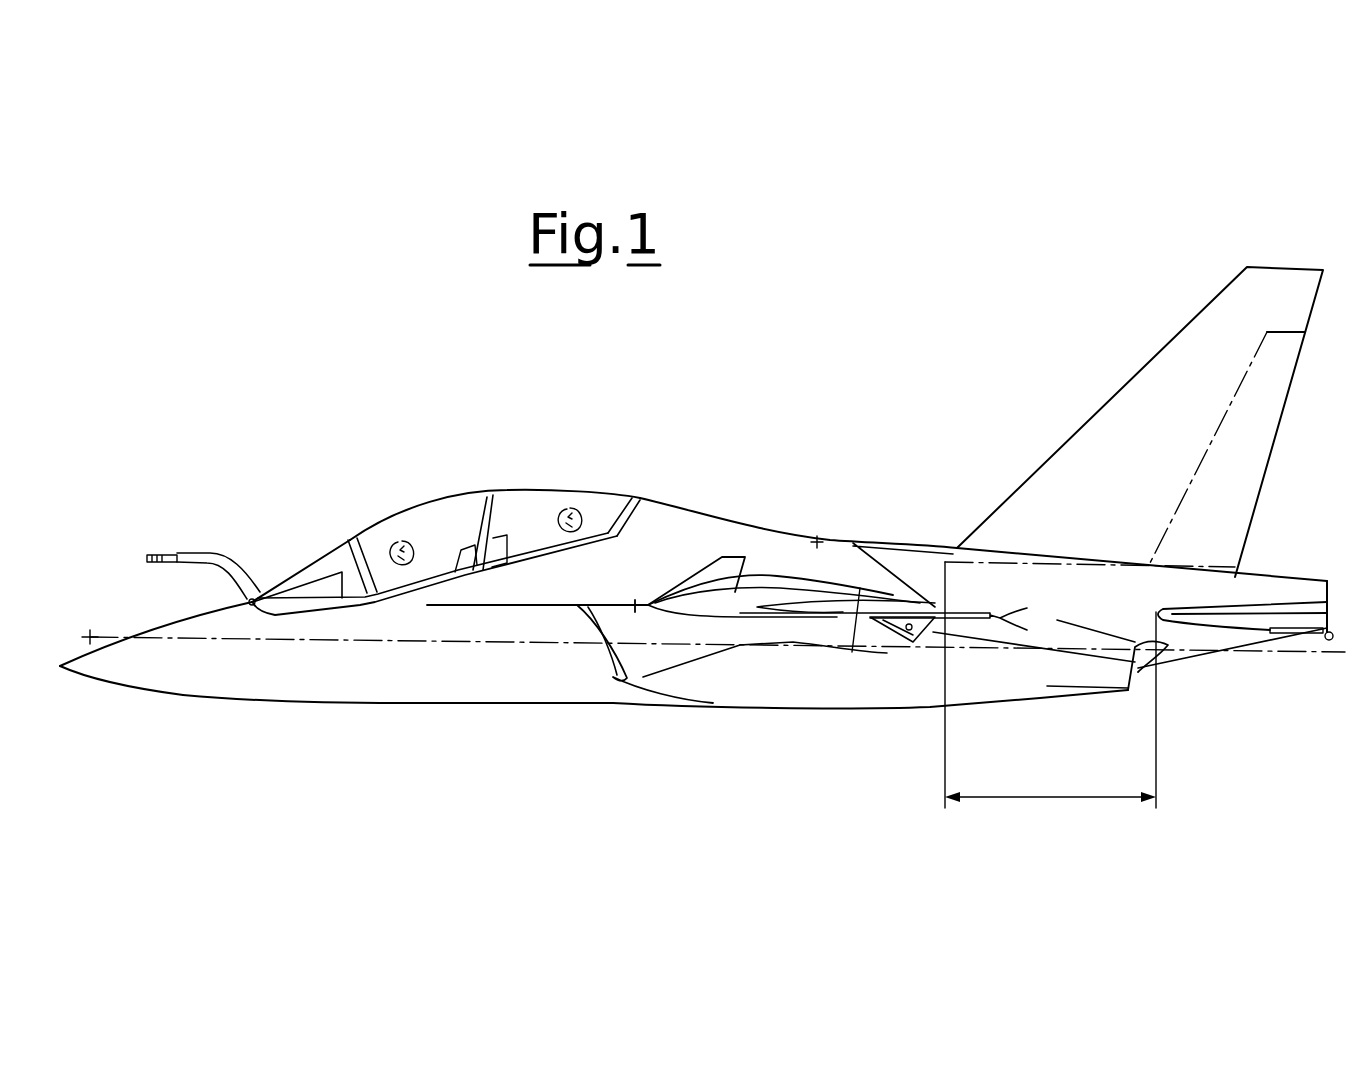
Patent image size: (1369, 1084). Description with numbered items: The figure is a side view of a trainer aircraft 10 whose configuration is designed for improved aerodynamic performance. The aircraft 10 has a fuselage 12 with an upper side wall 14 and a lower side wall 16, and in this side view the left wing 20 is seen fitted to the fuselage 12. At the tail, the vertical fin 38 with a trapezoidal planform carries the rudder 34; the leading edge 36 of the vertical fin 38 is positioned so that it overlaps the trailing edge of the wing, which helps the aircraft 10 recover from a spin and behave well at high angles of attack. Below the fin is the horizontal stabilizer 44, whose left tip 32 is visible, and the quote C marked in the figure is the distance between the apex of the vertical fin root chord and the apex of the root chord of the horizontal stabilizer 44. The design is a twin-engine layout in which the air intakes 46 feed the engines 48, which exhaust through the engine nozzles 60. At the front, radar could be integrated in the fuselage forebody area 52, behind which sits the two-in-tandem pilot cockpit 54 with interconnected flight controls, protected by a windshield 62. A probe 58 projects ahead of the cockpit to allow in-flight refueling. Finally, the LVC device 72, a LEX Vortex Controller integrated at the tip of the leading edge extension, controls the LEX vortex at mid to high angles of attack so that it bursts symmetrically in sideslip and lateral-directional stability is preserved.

The aircraft 10 is at (328, 450).
The fuselage 12 is at (493, 708).
The upper side wall 14 is at (727, 525).
The lower side wall 16 is at (398, 688).
The left wing 20 is at (727, 605).
The tip 32 is at (1293, 631).
The rudder 34 is at (1283, 365).
The leading edge of the vertical fin 36 is at (1030, 468).
The vertical fin 38 is at (1198, 358).
The horizontal stabilizer 44 is at (1268, 598).
The air intakes 46 is at (613, 670).
The engines 48 is at (853, 543).
The fuselage forebody area 52 is at (88, 668).
The pilot cockpit 54 is at (443, 530).
The probe 58 is at (190, 553).
The engine nozzles 60 is at (1141, 668).
The windshield 62 is at (320, 567).
The LVC device 72 is at (710, 570).